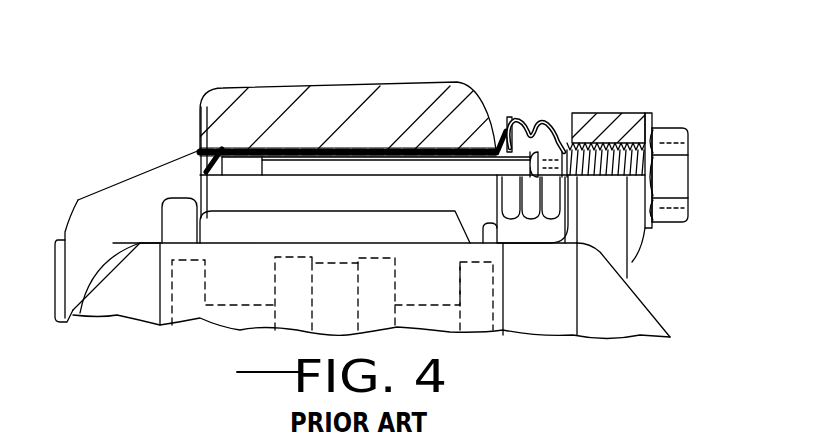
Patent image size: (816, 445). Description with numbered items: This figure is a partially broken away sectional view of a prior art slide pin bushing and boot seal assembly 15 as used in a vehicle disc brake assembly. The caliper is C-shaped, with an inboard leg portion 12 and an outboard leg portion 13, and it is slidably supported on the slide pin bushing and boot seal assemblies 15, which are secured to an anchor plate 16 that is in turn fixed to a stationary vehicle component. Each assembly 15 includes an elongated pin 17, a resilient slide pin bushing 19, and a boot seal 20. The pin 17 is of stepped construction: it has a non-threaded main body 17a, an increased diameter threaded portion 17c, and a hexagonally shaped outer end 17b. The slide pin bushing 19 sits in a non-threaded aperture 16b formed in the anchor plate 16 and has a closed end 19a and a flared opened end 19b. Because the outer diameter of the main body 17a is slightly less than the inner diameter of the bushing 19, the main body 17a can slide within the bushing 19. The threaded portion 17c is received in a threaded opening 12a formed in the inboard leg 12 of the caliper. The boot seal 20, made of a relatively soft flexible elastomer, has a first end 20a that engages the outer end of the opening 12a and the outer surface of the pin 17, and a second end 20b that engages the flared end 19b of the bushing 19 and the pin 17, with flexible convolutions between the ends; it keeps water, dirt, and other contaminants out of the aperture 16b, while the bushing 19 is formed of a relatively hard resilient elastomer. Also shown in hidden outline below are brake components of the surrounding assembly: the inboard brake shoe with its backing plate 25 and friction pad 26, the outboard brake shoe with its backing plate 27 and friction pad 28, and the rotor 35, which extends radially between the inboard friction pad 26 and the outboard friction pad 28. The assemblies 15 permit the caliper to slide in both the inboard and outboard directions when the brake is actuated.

The inboard leg portion 12 is at (632, 260).
The threaded opening 12a is at (657, 113).
The outboard leg portion 13 is at (93, 209).
The slide pin bushing and boot seal assembly 15 is at (600, 52).
The anchor plate 16 is at (463, 82).
The non-threaded aperture 16b is at (323, 148).
The pin 17 is at (688, 178).
The main body 17a is at (282, 163).
The hexagonally shaped outer end 17b is at (668, 127).
The threaded portion 17c is at (597, 178).
The slide pin bushing 19 is at (377, 146).
The closed end 19a is at (197, 162).
The flared opened end 19b is at (497, 127).
The boot seal 20 is at (527, 118).
The first end 20a is at (567, 132).
The second end 20b is at (507, 130).
The backing plate 25 is at (507, 313).
The friction pad 26 is at (440, 320).
The backing plate 27 is at (166, 328).
The friction pad 28 is at (230, 317).
The rotor 35 is at (332, 318).